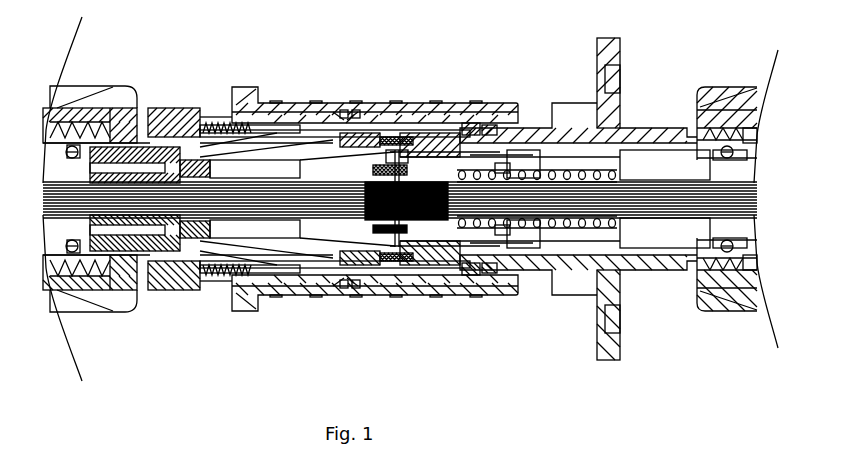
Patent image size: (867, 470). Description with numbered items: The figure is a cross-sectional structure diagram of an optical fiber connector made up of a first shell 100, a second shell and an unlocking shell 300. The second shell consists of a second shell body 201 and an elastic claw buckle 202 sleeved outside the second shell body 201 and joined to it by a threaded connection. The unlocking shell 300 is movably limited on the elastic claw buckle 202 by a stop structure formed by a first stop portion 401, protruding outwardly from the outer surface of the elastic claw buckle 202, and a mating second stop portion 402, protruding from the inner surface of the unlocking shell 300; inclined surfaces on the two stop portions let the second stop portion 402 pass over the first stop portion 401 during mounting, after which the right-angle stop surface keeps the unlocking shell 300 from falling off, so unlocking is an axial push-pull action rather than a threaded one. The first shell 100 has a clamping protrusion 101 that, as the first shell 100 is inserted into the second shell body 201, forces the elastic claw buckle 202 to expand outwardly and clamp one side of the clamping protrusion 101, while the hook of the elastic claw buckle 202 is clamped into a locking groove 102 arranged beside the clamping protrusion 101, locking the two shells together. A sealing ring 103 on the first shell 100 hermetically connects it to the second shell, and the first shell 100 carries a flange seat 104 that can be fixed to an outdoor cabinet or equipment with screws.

The first shell 100 is at (575, 130).
The clamping protrusion 101 is at (462, 127).
The locking groove 102 is at (478, 130).
The sealing ring 103 is at (395, 137).
The flange seat 104 is at (613, 58).
The second shell body 201 is at (298, 128).
The elastic claw buckle 202 is at (253, 128).
The unlocking shell 300 is at (502, 102).
The first stop portion 401 is at (357, 114).
The second stop portion 402 is at (343, 113).